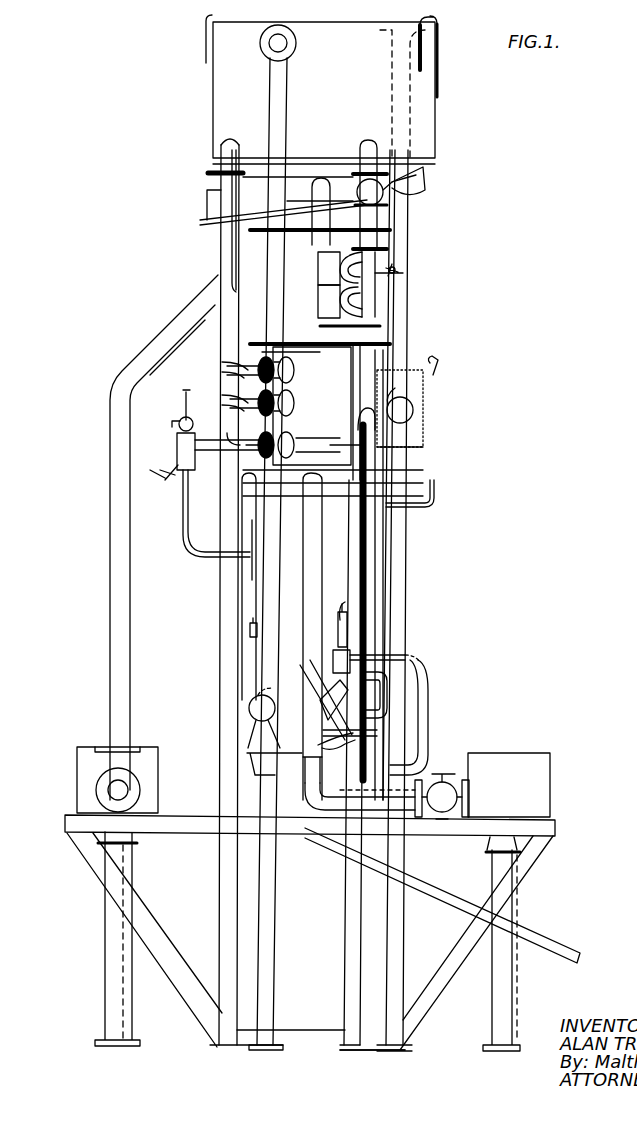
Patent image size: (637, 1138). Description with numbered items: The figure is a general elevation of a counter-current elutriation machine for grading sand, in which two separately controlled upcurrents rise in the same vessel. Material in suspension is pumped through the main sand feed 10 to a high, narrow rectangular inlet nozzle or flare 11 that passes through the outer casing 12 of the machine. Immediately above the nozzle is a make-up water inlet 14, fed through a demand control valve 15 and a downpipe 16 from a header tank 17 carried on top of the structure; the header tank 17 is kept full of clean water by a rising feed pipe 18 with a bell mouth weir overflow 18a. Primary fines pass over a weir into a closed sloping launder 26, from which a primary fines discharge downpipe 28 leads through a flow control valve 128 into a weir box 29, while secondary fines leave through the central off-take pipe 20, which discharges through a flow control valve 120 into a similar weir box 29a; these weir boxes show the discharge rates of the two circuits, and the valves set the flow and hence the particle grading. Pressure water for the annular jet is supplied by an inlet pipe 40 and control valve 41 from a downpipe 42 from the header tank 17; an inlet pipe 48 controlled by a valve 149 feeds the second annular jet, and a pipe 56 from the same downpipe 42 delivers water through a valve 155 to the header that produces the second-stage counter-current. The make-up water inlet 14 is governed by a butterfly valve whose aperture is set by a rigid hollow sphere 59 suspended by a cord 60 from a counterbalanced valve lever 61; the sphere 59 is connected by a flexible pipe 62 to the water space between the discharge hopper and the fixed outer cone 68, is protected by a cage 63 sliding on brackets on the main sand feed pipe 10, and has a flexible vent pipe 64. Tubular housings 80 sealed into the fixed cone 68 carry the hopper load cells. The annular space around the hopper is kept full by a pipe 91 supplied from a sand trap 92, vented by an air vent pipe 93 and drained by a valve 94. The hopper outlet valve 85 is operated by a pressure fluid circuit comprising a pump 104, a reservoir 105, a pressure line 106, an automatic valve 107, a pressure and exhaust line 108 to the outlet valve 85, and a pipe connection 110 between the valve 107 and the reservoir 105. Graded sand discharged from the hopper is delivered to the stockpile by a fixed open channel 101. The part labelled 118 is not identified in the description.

The main sand feed 10 is at (370, 366).
The inlet nozzle or flare 11 is at (325, 305).
The outer casing 12 is at (378, 290).
The make-up water inlet 14 is at (325, 275).
The demand control valve 15 is at (378, 187).
The downpipe 16 is at (372, 223).
The header tank 17 is at (350, 84).
The rising feed pipe 18 is at (270, 73).
The bell mouth weir overflow 18a is at (388, 53).
The central secondary fines removal pipe 20 is at (322, 185).
The closed sloping launder 26 is at (208, 198).
The primary fines discharge downpipe 28 is at (163, 338).
The weir box 29 is at (90, 752).
The weir box 29a is at (525, 758).
The inlet pipe 40 is at (262, 352).
The control valve 41 is at (302, 345).
The downpipe 42 is at (229, 243).
The inlet pipe 48 is at (240, 380).
The pipe 56 is at (222, 427).
The rigid hollow sphere 59 is at (405, 408).
The cord 60 is at (403, 313).
The counterbalanced valve lever 61 is at (396, 268).
The flexible pipe 62 is at (366, 530).
The cage 63 is at (423, 436).
The flexible vent pipe 64 is at (425, 61).
The fixed outer cone 68 is at (240, 600).
The tubular housings 80 is at (248, 620).
The hopper outlet valve 85 is at (300, 797).
The pipe 91 is at (183, 538).
The sand trap 92 is at (186, 448).
The air vent pipe 93 is at (439, 94).
The valve 94 is at (305, 750).
The fixed open channel 101 is at (553, 947).
The pump 104 is at (258, 700).
The reservoir 105 is at (387, 700).
The pressure line 106 is at (330, 690).
The automatic valve 107 is at (343, 652).
The pressure and exhaust line 108 is at (428, 697).
The pipe connection 110 is at (397, 660).
The bracket 118 is at (250, 735).
The flow control valve 120 is at (445, 772).
The flow control valve 128 is at (98, 786).
The valve 149 is at (283, 366).
The valve 155 is at (311, 390).